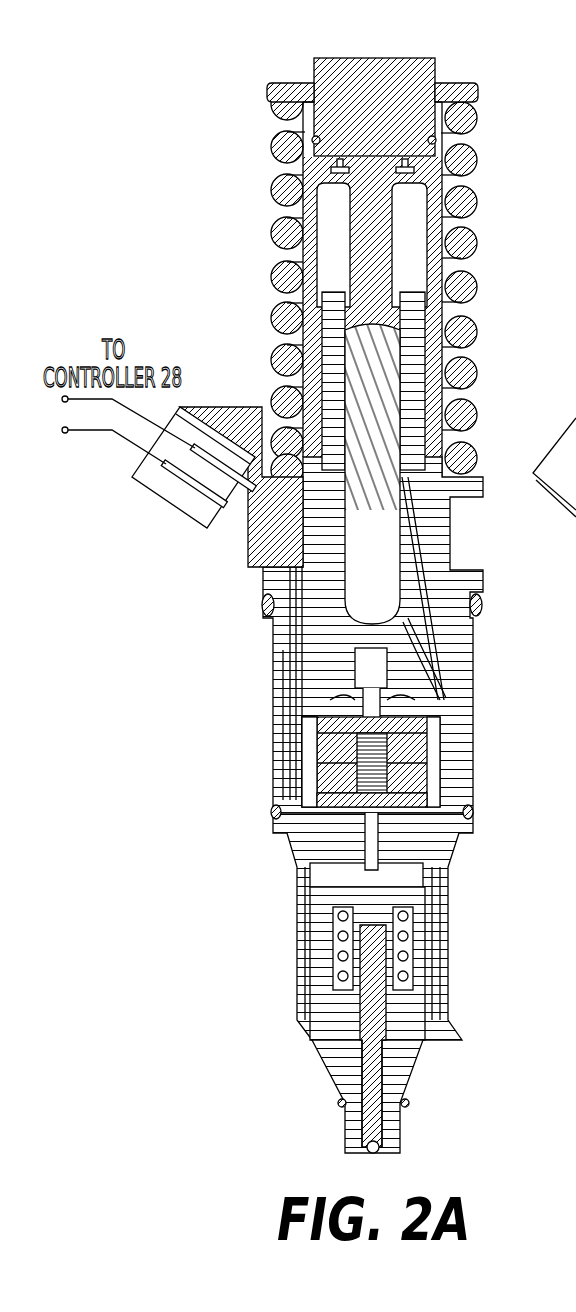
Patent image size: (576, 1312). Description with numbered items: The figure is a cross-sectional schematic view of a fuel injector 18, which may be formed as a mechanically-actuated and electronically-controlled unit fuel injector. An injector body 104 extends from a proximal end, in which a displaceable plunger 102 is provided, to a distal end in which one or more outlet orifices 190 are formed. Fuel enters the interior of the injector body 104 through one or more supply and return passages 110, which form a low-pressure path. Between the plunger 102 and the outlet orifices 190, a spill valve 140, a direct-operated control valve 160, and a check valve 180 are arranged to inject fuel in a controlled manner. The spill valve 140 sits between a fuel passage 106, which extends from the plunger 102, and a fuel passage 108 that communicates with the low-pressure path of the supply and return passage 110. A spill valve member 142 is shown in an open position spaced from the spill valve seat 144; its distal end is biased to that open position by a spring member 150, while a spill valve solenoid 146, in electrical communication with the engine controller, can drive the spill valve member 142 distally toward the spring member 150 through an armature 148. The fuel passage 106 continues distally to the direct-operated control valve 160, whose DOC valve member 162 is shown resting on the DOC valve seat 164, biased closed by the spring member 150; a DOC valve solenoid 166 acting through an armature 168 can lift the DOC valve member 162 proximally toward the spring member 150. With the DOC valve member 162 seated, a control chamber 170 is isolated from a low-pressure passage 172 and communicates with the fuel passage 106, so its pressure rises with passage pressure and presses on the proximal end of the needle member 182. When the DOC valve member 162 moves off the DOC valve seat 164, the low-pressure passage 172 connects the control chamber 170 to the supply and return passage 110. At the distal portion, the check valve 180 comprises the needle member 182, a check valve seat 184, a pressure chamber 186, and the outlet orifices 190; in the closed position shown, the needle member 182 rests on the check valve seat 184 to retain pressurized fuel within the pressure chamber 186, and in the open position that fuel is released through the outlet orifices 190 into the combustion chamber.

The fuel injector 18 is at (262, 622).
The plunger 102 is at (390, 378).
The injector body 104 is at (483, 567).
The fuel passage 106 is at (468, 650).
The fuel passage 108 is at (290, 702).
The supply and return passage 110 is at (277, 717).
The spill valve 140 is at (448, 700).
The spill valve member 142 is at (440, 730).
The spill valve seat 144 is at (448, 693).
The spill valve solenoid 146 is at (290, 757).
The armature 148 is at (440, 757).
The spring member 150 is at (290, 770).
The direct-operated control (DOC) valve 160 is at (416, 833).
The DOC valve member 162 is at (290, 847).
The DOC valve seat 164 is at (400, 895).
The DOC valve solenoid 166 is at (418, 782).
The armature 168 is at (418, 803).
The control chamber 170 is at (410, 915).
The low-pressure passage 172 is at (307, 885).
The check valve 180 is at (430, 953).
The needle member 182 is at (383, 1095).
The check valve seat 184 is at (377, 1140).
The pressure chamber 186 is at (385, 1052).
The outlet orifices 190 is at (367, 1157).